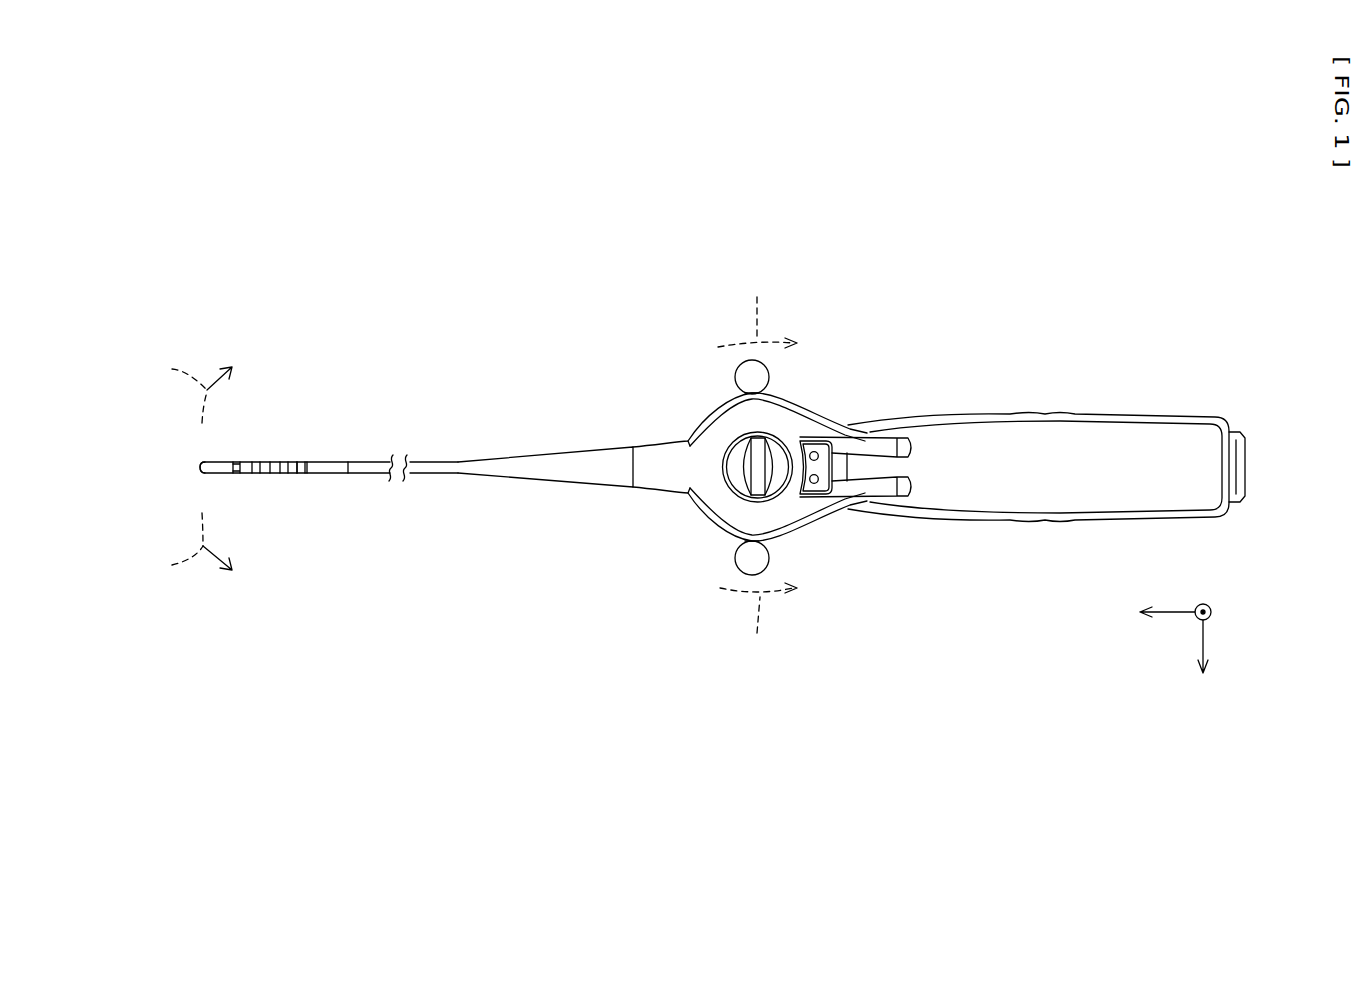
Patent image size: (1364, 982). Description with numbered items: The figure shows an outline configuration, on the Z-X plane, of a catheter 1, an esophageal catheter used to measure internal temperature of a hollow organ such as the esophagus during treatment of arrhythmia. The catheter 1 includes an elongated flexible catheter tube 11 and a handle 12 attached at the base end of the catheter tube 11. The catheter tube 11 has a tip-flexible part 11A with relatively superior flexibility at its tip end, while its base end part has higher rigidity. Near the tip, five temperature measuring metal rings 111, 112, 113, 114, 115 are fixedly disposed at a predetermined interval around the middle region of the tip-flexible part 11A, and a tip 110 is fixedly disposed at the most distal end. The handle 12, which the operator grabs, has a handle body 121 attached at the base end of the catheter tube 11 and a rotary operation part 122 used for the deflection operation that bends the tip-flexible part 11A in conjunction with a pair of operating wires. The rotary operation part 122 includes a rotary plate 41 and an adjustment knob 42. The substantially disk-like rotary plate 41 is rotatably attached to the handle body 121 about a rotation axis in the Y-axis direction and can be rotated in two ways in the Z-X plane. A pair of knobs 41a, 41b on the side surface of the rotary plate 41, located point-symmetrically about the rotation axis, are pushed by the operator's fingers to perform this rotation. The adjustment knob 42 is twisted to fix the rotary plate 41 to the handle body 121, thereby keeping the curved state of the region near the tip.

The catheter 1 is at (1065, 198).
The catheter tube 11 is at (433, 470).
The tip-flexible part 11A is at (350, 480).
The tip 110 is at (200, 467).
The metal ring 111 is at (232, 462).
The metal ring 112 is at (252, 462).
The metal ring 113 is at (269, 462).
The metal ring 114 is at (287, 462).
The metal ring 115 is at (304, 462).
The handle 12 is at (1055, 300).
The handle body 121 is at (1033, 447).
The rotary operation part 122 is at (827, 387).
The rotary plate 41 is at (713, 420).
The knob 41a is at (743, 377).
The knob 41b is at (745, 558).
The adjustment knob 42 is at (758, 467).